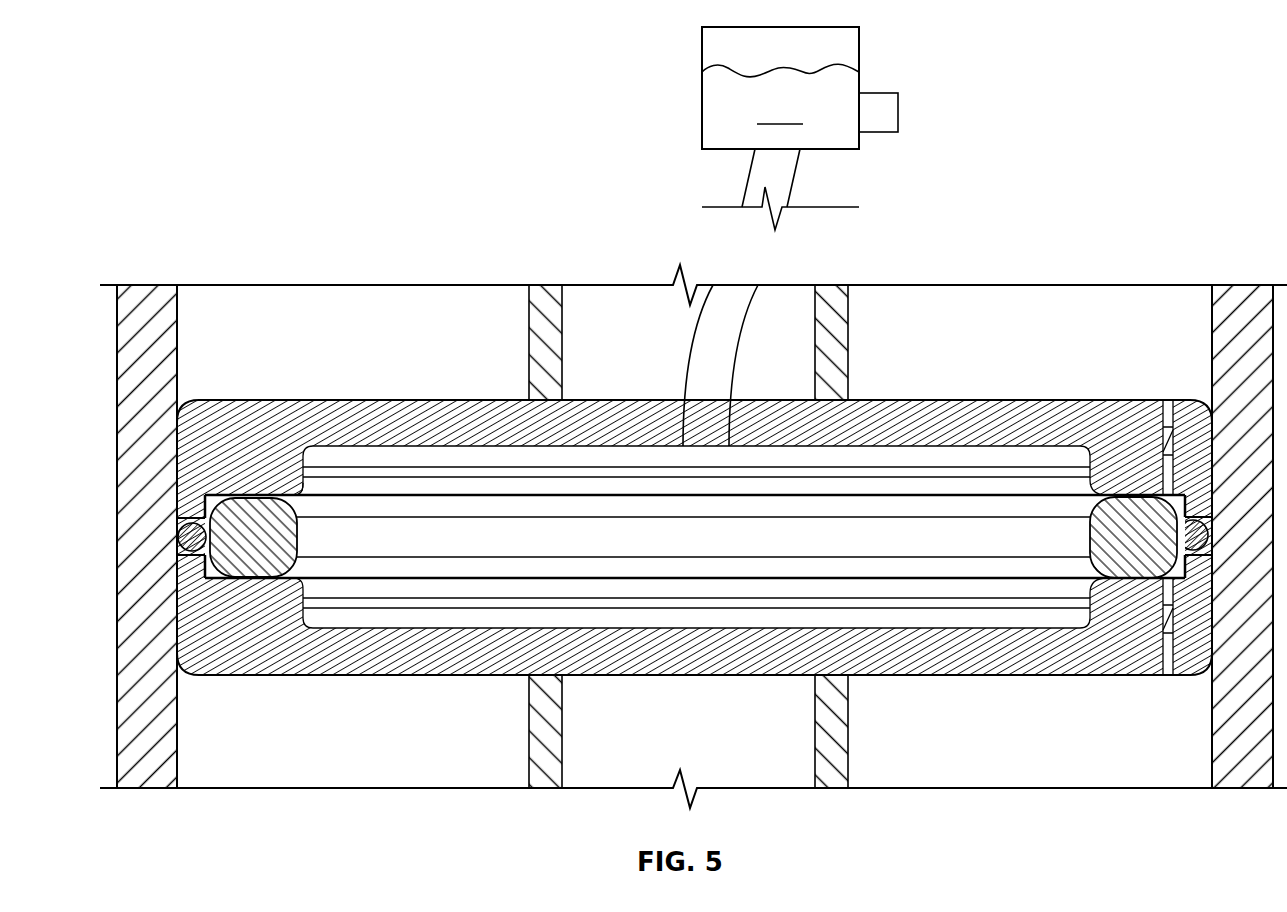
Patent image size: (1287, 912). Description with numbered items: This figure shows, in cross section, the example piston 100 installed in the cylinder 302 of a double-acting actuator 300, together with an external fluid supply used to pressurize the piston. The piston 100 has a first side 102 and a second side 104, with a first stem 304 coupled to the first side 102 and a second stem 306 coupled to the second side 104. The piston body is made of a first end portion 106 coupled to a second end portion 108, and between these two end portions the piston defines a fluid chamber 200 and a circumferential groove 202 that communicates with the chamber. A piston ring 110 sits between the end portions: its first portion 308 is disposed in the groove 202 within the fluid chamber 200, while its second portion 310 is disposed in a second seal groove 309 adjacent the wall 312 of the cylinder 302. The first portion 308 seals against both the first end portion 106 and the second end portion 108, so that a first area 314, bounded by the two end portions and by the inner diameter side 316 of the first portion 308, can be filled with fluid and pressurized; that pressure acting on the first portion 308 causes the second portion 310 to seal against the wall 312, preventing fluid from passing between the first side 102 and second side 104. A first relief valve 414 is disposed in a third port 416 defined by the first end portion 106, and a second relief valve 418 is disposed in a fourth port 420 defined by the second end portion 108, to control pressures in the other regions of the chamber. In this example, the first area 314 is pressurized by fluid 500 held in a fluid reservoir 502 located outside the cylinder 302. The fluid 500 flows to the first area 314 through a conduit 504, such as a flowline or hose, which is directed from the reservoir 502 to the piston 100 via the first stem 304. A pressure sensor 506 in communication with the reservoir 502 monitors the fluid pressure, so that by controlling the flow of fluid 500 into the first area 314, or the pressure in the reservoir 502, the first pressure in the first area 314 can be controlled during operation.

The piston 100 is at (993, 352).
The first side of the piston 102 is at (428, 398).
The second side of the piston 104 is at (860, 677).
The first end portion 106 is at (262, 415).
The second end portion 108 is at (313, 655).
The piston ring 110 is at (668, 540).
The fluid chamber 200 is at (793, 477).
The circumferential groove 202 is at (177, 556).
The double-acting actuator 300 is at (1190, 246).
The cylinder 302 is at (135, 332).
The first stem 304 is at (529, 326).
The second stem 306 is at (529, 723).
The first portion of the piston ring 308 is at (250, 515).
The second seal groove 309 is at (297, 498).
The second portion of the piston ring 310 is at (192, 543).
The wall of the cylinder 312 is at (177, 333).
The first area 314 is at (388, 483).
The inner diameter side 316 is at (1083, 547).
The first relief valve 414 is at (1165, 420).
The third port 416 is at (1167, 402).
The second relief valve 418 is at (1165, 637).
The fourth port 420 is at (1167, 675).
The fluid 500 is at (780, 128).
The fluid reservoir 502 is at (708, 52).
The conduit 504 is at (753, 192).
The pressure sensor 506 is at (893, 110).